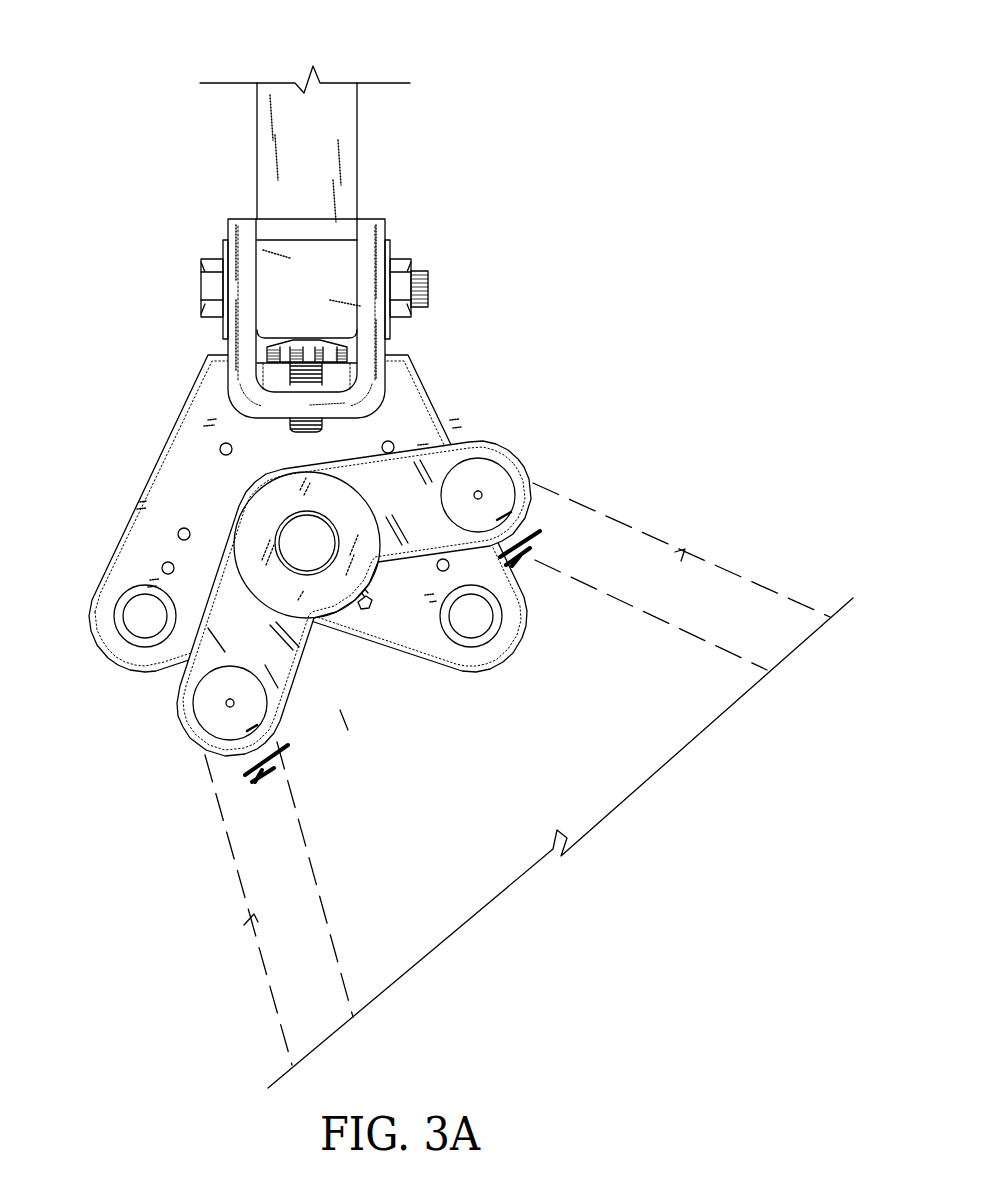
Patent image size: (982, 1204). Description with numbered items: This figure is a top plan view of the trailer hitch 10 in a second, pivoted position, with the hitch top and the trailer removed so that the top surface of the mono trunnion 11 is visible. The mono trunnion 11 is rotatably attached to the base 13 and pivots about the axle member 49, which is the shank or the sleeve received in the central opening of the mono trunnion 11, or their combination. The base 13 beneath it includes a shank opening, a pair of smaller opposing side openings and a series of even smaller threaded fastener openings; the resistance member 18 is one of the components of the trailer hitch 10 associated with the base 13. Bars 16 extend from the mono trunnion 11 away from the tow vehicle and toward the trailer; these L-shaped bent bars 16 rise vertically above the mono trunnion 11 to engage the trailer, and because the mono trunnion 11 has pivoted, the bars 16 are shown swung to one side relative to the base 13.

The trailer hitch 10 is at (72, 66).
The mono trunnion 11 is at (490, 440).
The base 13 is at (172, 473).
The bars 16 is at (690, 547).
The resistance member 18 is at (137, 623).
The axle member 49 is at (305, 538).